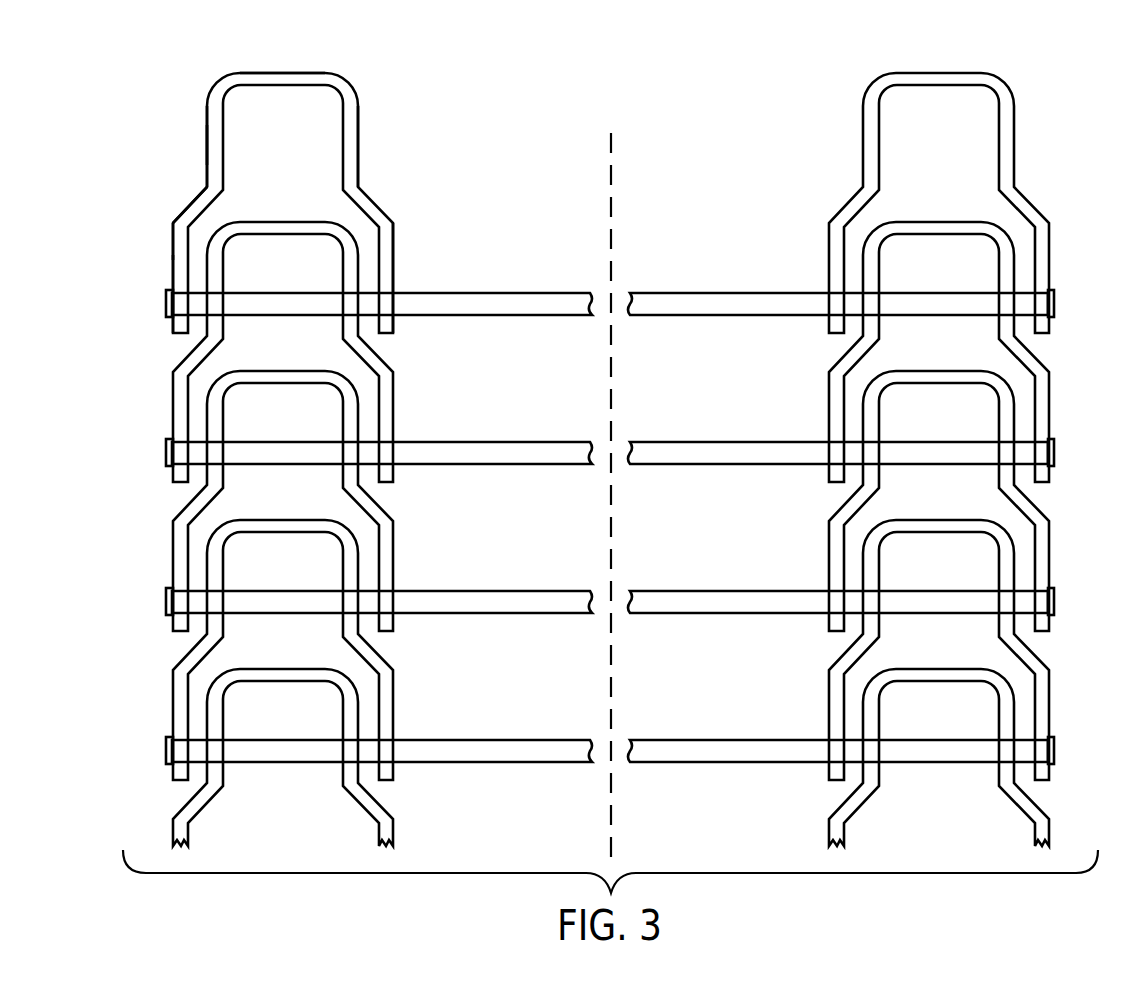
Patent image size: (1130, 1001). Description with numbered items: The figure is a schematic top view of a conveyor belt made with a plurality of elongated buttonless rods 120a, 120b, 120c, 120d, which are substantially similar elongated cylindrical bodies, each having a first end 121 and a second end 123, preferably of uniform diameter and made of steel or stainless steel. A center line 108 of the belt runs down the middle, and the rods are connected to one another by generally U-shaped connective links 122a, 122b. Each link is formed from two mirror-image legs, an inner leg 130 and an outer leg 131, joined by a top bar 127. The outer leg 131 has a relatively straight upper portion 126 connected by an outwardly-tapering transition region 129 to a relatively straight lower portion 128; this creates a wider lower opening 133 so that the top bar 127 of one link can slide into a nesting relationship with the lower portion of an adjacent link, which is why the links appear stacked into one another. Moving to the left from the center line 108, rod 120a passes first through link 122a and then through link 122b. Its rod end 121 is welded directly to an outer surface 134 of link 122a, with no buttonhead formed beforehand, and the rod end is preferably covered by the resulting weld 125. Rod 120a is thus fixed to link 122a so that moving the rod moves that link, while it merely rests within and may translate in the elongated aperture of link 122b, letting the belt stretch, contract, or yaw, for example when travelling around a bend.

The center line 108 is at (611, 193).
The buttonless rod 120a is at (518, 300).
The buttonless rod 120b is at (610, 425).
The buttonless rod 120c is at (610, 570).
The buttonless rod 120d is at (610, 717).
The first end 121 is at (165, 305).
The connective link 122a is at (366, 97).
The connective link 122b is at (401, 379).
The second end 123 is at (1056, 302).
The weld 125 is at (168, 440).
The upper portion 126 is at (207, 118).
The top bar 127 is at (272, 77).
The lower portion 128 is at (172, 238).
The transition region 129 is at (194, 206).
The inner leg 130 is at (368, 163).
The outer leg 131 is at (200, 146).
The lower opening 133 is at (370, 262).
The outer surface 134 is at (172, 270).